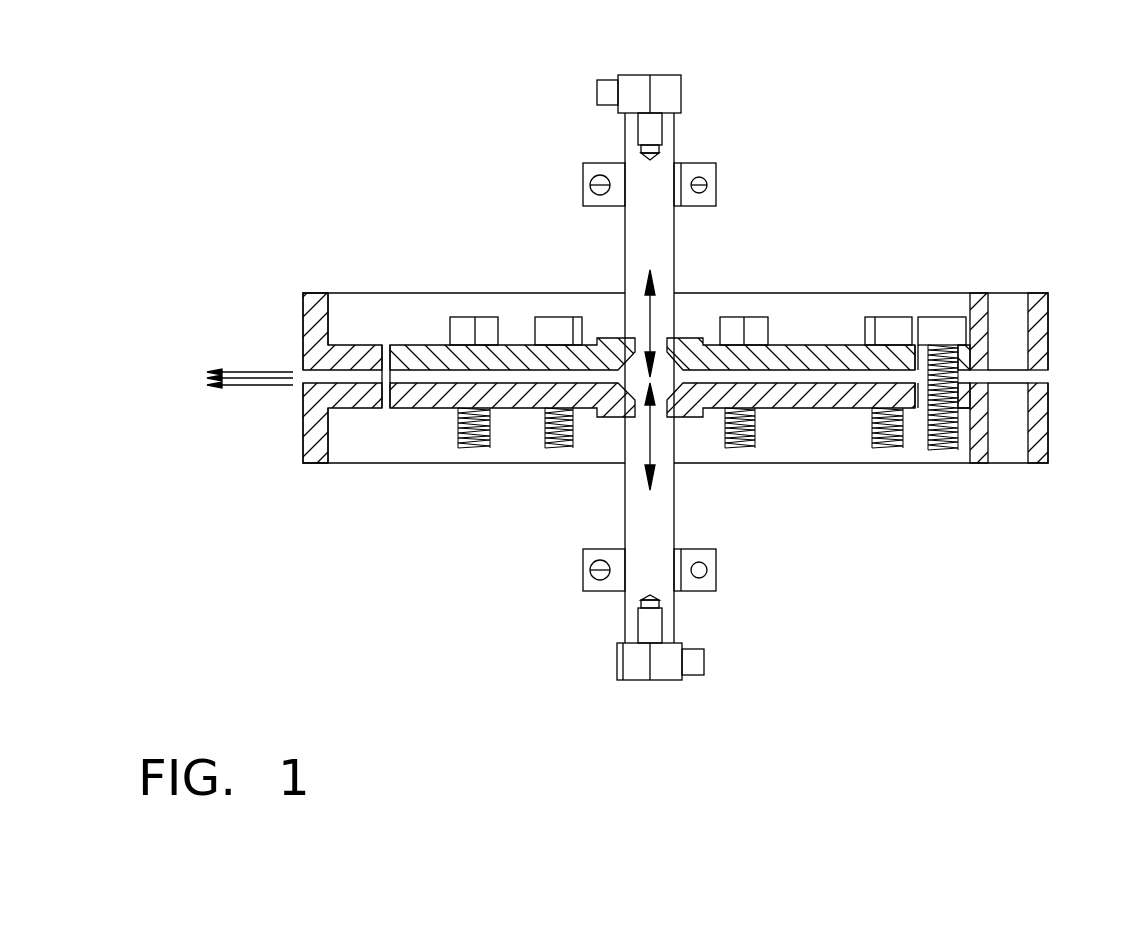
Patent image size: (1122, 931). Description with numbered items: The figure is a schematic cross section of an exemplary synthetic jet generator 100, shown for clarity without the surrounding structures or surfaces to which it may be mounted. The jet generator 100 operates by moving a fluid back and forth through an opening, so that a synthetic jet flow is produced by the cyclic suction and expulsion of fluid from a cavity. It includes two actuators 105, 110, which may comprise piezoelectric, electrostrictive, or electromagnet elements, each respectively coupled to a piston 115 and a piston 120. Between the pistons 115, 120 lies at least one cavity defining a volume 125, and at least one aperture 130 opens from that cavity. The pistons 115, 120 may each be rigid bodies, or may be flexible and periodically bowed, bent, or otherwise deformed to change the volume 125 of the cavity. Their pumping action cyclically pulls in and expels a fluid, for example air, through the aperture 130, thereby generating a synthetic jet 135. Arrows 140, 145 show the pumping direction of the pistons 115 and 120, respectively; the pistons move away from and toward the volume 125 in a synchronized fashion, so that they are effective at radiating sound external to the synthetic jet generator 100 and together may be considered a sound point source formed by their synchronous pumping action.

The jet generator 100 is at (611, 368).
The actuator 105 is at (625, 132).
The actuator 110 is at (625, 612).
The piston 115 is at (773, 352).
The piston 120 is at (798, 400).
The volume 125 is at (528, 383).
The aperture 130 is at (293, 368).
The synthetic jet 135 is at (258, 388).
The arrow 140 is at (650, 322).
The arrow 145 is at (650, 437).